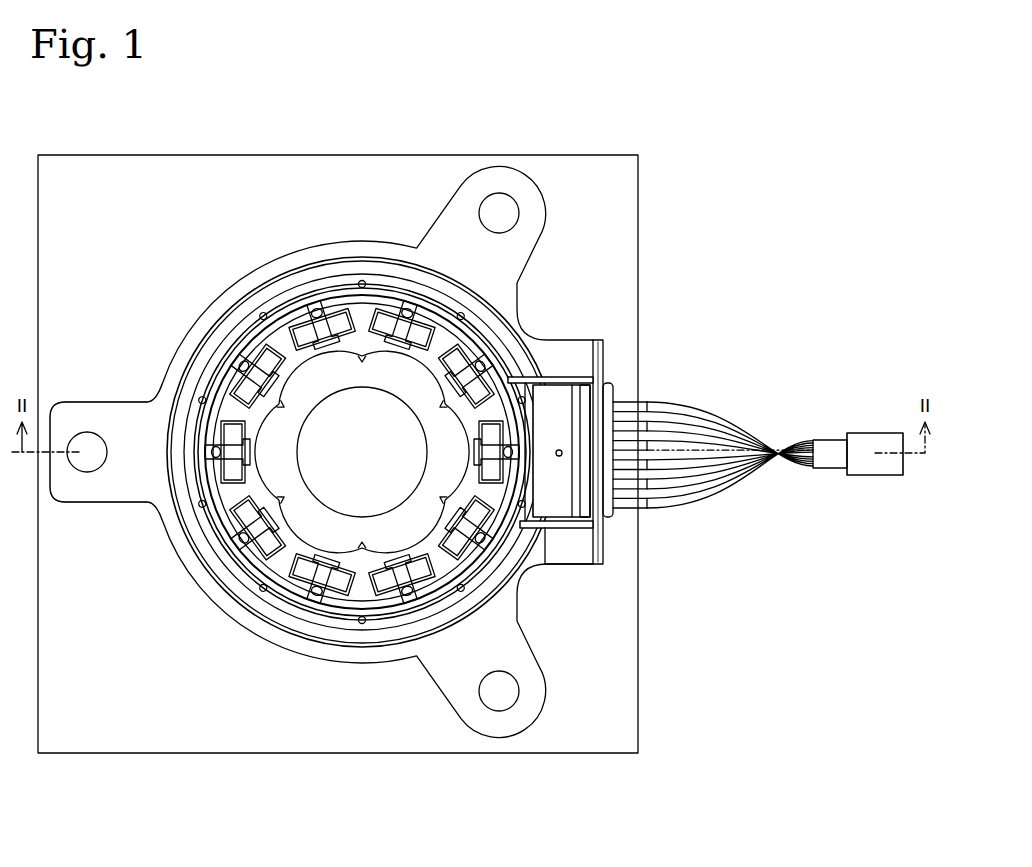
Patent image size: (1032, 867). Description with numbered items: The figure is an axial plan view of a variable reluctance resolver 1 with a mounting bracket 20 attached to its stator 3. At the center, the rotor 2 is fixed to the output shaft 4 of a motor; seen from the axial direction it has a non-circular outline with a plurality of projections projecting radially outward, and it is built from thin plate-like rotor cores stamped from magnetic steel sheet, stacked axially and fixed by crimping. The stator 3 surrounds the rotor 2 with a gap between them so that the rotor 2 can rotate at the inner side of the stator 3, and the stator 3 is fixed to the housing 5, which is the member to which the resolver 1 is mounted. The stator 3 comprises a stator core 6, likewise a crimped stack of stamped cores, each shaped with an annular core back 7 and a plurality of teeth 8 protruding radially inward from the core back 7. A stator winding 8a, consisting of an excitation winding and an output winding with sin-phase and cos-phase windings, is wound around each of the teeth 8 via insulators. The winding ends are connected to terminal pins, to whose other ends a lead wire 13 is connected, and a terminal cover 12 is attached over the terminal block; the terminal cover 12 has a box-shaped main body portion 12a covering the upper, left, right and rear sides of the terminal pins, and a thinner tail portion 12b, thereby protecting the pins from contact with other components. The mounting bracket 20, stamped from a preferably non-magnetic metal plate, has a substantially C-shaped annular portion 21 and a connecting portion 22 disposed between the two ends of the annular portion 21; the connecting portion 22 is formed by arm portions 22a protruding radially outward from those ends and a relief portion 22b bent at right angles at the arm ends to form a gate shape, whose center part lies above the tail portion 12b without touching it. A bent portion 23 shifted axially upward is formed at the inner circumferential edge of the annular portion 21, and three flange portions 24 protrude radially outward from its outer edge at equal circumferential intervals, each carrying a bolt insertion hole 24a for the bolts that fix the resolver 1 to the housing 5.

The resolver 1 is at (431, 433).
The rotor 2 is at (329, 537).
The stator 3 is at (217, 473).
The output shaft 4 is at (353, 492).
The housing 5 is at (317, 452).
The stator core 6 is at (469, 405).
The core back 7 is at (468, 313).
The teeth 8 is at (362, 482).
The stator winding 8a is at (430, 572).
The terminal cover 12 is at (605, 453).
The main body portion 12a is at (565, 509).
The tail portion 12b is at (587, 503).
The lead wire 13 is at (740, 428).
The mounting bracket 20 is at (354, 414).
The annular portion 21 is at (207, 578).
The connecting portion 22 is at (627, 420).
The arm portions 22a is at (566, 352).
The relief portion 22b is at (645, 433).
The bent portion 23 is at (233, 345).
The flange portions 24 is at (92, 492).
The bolt insertion holes 24a is at (103, 447).